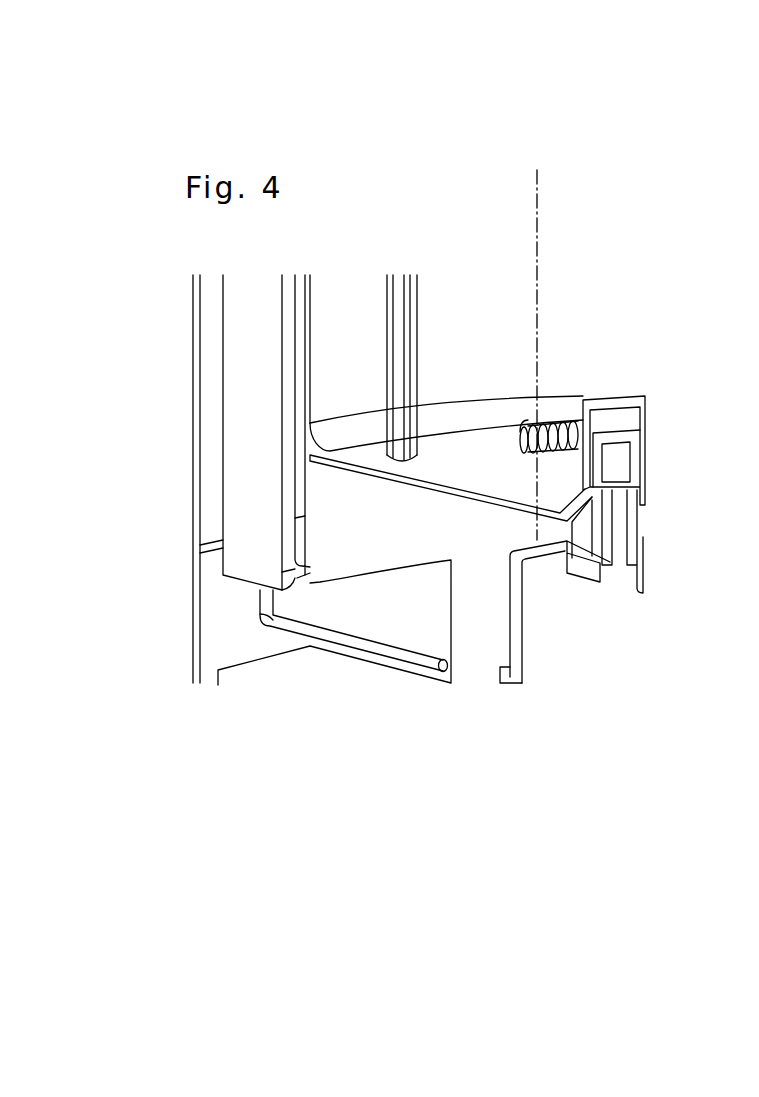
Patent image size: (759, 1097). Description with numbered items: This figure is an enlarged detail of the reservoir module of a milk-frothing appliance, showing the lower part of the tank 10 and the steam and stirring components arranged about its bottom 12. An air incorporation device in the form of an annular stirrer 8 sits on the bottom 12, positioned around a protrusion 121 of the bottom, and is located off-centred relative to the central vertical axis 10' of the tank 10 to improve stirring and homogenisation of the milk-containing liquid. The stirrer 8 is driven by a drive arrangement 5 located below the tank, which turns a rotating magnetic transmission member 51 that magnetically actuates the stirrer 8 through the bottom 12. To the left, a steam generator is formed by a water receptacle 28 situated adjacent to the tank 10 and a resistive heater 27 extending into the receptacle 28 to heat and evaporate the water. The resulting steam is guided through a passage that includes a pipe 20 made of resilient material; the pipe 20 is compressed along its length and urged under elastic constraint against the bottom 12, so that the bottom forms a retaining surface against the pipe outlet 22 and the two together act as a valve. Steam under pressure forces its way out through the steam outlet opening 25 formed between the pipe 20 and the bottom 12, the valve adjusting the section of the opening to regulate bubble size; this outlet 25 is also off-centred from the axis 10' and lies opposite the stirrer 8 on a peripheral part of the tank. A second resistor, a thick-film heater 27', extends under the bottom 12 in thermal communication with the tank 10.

The tank 10 is at (450, 422).
The central vertical axis 10' is at (566, 351).
The pipe 20 is at (398, 312).
The water receptacle 28 is at (215, 318).
The heater 27 is at (212, 432).
The thick-film heater 27' is at (451, 506).
The pipe outlet 22 is at (398, 458).
The steam outlet opening 25 is at (426, 454).
The tank bottom 12 is at (482, 462).
The stirrer 8 is at (558, 426).
The protrusion 121 is at (633, 404).
The magnetic transmission member 51 is at (620, 479).
The drive arrangement 5 is at (555, 612).